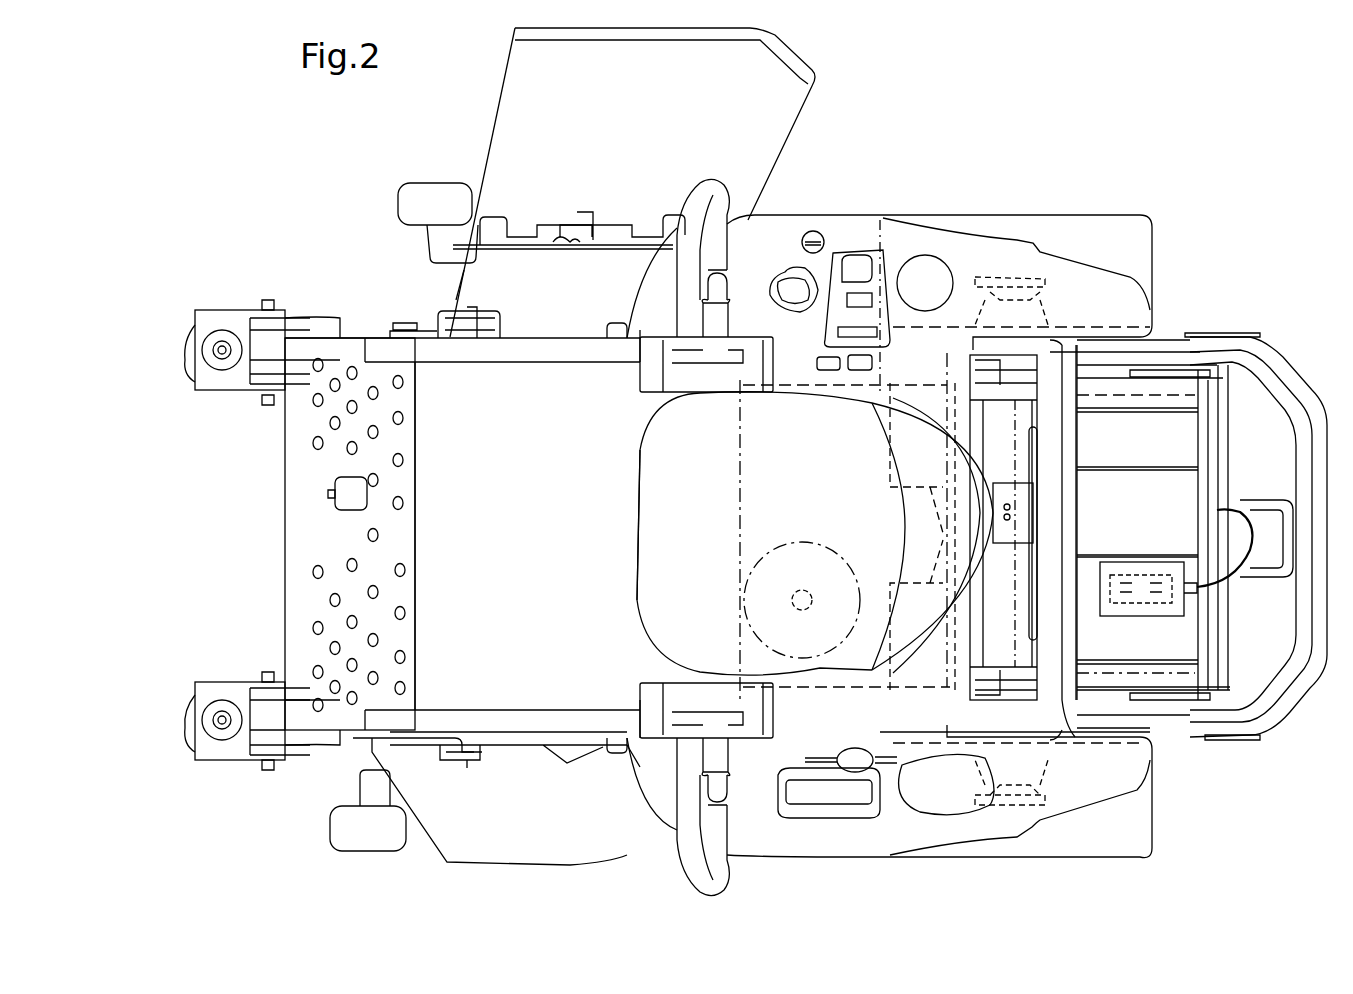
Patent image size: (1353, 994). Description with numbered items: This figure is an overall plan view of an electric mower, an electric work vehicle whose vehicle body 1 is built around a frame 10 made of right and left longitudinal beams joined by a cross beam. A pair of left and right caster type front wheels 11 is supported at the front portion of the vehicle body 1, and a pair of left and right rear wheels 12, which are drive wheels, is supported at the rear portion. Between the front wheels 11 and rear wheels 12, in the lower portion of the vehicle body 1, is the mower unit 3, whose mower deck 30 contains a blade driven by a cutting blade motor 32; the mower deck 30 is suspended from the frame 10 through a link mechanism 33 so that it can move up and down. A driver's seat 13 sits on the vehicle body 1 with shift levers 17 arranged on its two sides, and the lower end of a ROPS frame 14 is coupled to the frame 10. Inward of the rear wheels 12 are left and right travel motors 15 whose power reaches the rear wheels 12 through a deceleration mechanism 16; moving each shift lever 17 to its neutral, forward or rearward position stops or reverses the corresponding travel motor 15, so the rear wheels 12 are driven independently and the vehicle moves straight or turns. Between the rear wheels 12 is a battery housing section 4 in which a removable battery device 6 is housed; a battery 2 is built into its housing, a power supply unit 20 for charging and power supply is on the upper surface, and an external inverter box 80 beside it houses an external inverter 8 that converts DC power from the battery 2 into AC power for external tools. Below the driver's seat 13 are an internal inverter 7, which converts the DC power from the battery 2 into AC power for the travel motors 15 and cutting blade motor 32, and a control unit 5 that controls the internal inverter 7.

The vehicle body 1 is at (183, 128).
The battery 2 is at (1198, 360).
The mower unit 3 is at (440, 858).
The battery housing section 4 is at (1175, 330).
The control unit 5 is at (740, 450).
The battery device 6 is at (1160, 690).
The internal inverter 7 is at (638, 525).
The external inverter 8 is at (1224, 548).
The frame 10 is at (275, 360).
The front wheels 11 is at (305, 330).
The rear wheels 12 is at (1062, 213).
The driver's seat 13 is at (612, 472).
The ROPS frame 14 is at (1068, 432).
The travel motors 15 is at (974, 540).
The deceleration mechanism 16 is at (975, 318).
The shift levers 17 is at (703, 190).
The power supply unit 20 is at (1140, 478).
The mower deck 30 is at (512, 840).
The cutting blade motor 32 is at (770, 545).
The link mechanism 33 is at (395, 328).
The external inverter box 80 is at (1168, 608).